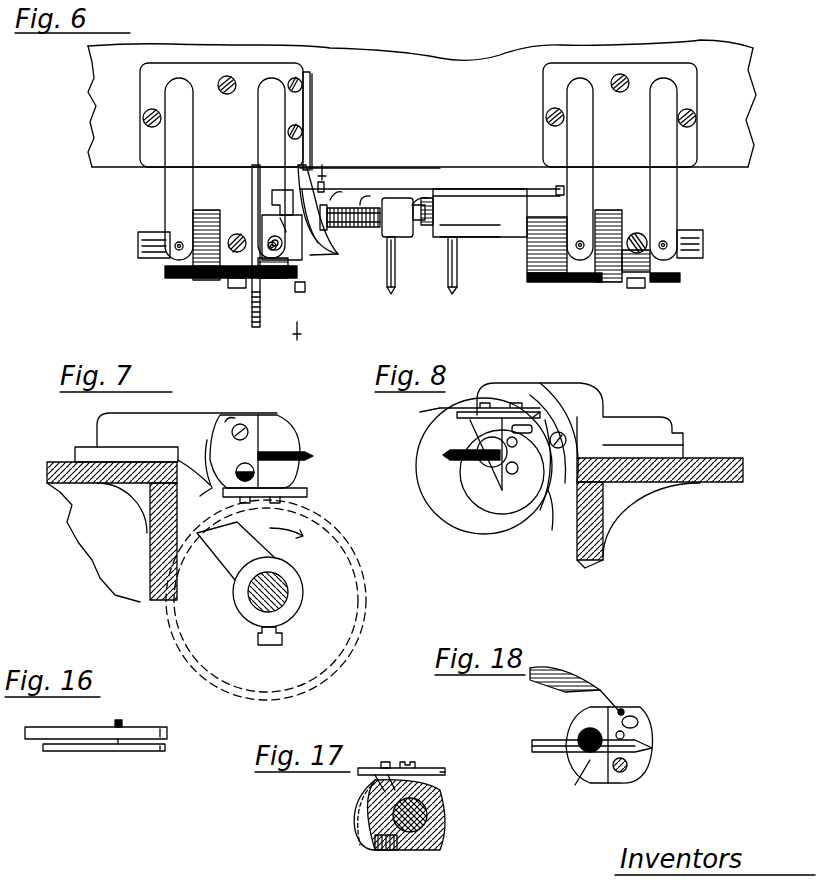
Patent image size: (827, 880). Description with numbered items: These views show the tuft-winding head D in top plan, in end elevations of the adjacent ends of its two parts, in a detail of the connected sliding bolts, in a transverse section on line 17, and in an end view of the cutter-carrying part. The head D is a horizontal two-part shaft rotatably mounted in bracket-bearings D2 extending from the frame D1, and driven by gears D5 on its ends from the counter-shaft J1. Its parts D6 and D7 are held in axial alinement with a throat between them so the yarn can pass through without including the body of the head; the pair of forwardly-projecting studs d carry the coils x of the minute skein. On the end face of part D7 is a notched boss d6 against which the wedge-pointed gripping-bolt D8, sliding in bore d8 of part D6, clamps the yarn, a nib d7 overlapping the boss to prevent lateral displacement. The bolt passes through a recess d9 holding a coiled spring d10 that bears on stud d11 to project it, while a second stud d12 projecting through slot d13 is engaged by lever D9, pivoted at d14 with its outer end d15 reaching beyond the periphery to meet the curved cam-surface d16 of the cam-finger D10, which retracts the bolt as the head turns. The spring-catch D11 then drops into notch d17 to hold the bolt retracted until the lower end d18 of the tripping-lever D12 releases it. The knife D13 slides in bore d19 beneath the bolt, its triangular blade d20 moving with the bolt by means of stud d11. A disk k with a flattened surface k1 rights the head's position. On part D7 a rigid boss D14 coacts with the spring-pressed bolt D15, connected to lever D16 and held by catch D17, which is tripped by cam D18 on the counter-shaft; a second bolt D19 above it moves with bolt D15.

In FIG. 6, the frame D1 is at (422, 103).
In FIG. 7, the frame D1 is at (47, 484).
In FIG. 8, the frame D1 is at (718, 482).
In FIG. 6, the bracket-bearings D2 is at (265, 155).
In FIG. 7, the bracket-bearings D2 is at (185, 420).
In FIG. 8, the bracket-bearings D2 is at (635, 412).
In FIG. 6, the gears D5 is at (200, 282).
In FIG. 16, the head part D6 is at (80, 712).
In FIG. 17, the head part D6 is at (442, 838).
In FIG. 18, the head part D6 is at (634, 718).
In FIG. 6, the head part D7 is at (505, 228).
In FIG. 7, the head part D7 is at (228, 430).
In FIG. 6, the gripping-bolt D8 is at (455, 205).
In FIG. 8, the gripping-bolt D8 is at (585, 410).
In FIG. 17, the gripping-bolt D8 is at (430, 792).
In FIG. 18, the gripping-bolt D8 is at (640, 720).
In FIG. 6, the lever D9 is at (318, 268).
In FIG. 8, the lever D9 is at (468, 410).
In FIG. 17, the lever D9 is at (440, 770).
In FIG. 6, the cam-finger D10 is at (302, 110).
In FIG. 8, the cam-finger D10 is at (612, 398).
In FIG. 7, the spring-catch D11 is at (205, 478).
In FIG. 8, the spring-catch D11 is at (560, 495).
In FIG. 17, the spring-catch D11 is at (355, 830).
In FIG. 6, the tripping-lever D12 is at (252, 175).
In FIG. 6, the knife D13 is at (478, 205).
In FIG. 8, the knife D13 is at (508, 472).
In FIG. 16, the knife D13 is at (87, 752).
In FIG. 17, the knife D13 is at (428, 812).
In FIG. 18, the knife D13 is at (625, 735).
In FIG. 8, the stud or boss D14 is at (512, 470).
In FIG. 7, the sliding spring-pressed bolt D15 is at (254, 473).
In FIG. 18, the sliding spring-pressed bolt D15 is at (626, 767).
In FIG. 6, the lever D16 is at (545, 282).
In FIG. 7, the lever D16 is at (297, 495).
In FIG. 6, the catch D17 is at (561, 186).
In FIG. 7, the cam D18 is at (213, 560).
In FIG. 7, the second sliding bolt D19 is at (247, 432).
In FIG. 18, the second sliding bolt D19 is at (622, 712).
In FIG. 6, the head D is at (420, 200).
In FIG. 8, the head D is at (540, 410).
In FIG. 7, the counter-shaft J1 is at (290, 598).
In FIG. 6, the disk k is at (250, 300).
In FIG. 8, the disk k is at (506, 480).
In FIG. 6, the flattened surface k1 is at (272, 205).
In FIG. 8, the flattened surface k1 is at (445, 407).
In FIG. 6, the studs d is at (388, 293).
In FIG. 7, the studs d is at (313, 455).
In FIG. 8, the studs d is at (443, 458).
In FIG. 18, the studs d is at (592, 746).
In FIG. 6, the boss d6 is at (432, 212).
In FIG. 7, the boss d6 is at (240, 434).
In FIG. 6, the nib d7 is at (375, 212).
In FIG. 8, the nib d7 is at (512, 430).
In FIG. 16, the nib d7 is at (167, 731).
In FIG. 18, the nib d7 is at (590, 705).
In FIG. 6, the bore d8 is at (366, 198).
In FIG. 6, the recess d9 is at (340, 195).
In FIG. 6, the coiled spring d10 is at (350, 232).
In FIG. 6, the stud d11 is at (397, 200).
In FIG. 16, the stud d11 is at (120, 720).
In FIG. 6, the second stud d12 is at (322, 182).
In FIG. 8, the second stud d12 is at (542, 414).
In FIG. 17, the second stud d12 is at (385, 762).
In FIG. 6, the slot d13 is at (270, 280).
In FIG. 6, the pivot d14 is at (312, 258).
In FIG. 17, the pivot d14 is at (408, 762).
In FIG. 6, the lever end d15 is at (300, 292).
In FIG. 17, the lever end d15 is at (446, 772).
In FIG. 6, the cam-surface d16 is at (296, 250).
In FIG. 17, the notch d17 is at (378, 785).
In FIG. 8, the lower end d18 is at (555, 520).
In FIG. 8, the bore d19 is at (500, 425).
In FIG. 6, the blade d20 is at (430, 228).
In FIG. 8, the blade d20 is at (510, 447).
In FIG. 16, the blade d20 is at (165, 747).
In FIG. 18, the blade d20 is at (622, 740).
In FIG. 6, the section line 17 is at (311, 257).
In FIG. 18, the coils x is at (582, 782).